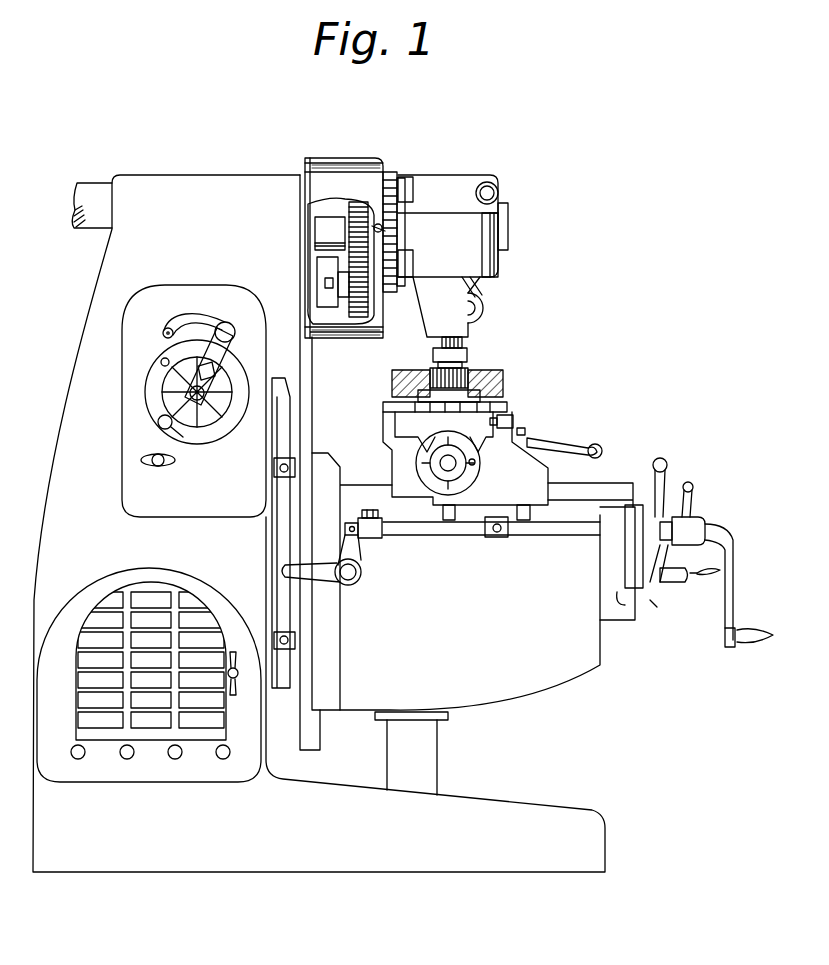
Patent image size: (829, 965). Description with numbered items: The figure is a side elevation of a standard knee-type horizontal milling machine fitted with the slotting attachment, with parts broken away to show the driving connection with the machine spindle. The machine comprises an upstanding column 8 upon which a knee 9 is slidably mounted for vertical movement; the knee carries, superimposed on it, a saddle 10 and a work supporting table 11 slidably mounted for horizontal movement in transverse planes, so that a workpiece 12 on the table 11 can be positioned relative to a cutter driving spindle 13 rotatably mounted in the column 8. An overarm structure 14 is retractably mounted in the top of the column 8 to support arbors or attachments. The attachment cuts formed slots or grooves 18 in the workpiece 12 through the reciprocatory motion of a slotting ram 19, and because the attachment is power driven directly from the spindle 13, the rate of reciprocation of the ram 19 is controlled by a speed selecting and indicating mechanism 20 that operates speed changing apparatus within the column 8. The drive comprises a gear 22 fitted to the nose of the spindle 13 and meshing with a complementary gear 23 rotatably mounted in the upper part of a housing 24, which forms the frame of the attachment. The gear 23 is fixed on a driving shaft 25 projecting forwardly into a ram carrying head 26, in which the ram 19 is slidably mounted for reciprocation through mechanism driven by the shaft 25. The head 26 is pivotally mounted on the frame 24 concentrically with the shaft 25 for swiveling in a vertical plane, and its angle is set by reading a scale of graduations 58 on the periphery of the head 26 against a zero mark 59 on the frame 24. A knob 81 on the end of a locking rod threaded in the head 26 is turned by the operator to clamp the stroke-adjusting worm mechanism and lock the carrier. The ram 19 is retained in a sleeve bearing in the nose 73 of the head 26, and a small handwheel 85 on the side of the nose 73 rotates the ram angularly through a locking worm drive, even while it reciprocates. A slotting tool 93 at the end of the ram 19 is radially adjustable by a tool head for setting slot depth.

The column 8 is at (90, 293).
The knee 9 is at (527, 695).
The saddle 10 is at (538, 477).
The work supporting table 11 is at (507, 407).
The workpiece 12 is at (503, 383).
The cutter driving spindle 13 is at (320, 273).
The overarm structure 14 is at (95, 183).
The slots or grooves 18 is at (432, 368).
The slotting ram 19 is at (462, 343).
The speed selecting and indicating mechanism 20 is at (208, 433).
The gear 22 is at (350, 313).
The complementary gear 23 is at (315, 233).
The housing 24 is at (380, 160).
The driving shaft 25 is at (347, 221).
The ram carrying head 26 is at (502, 268).
The scale of graduations 58 is at (398, 233).
The zero mark 59 is at (379, 223).
The nose 73 is at (438, 305).
The knob 81 is at (477, 200).
The handwheel 85 is at (497, 300).
The slotting tool 93 is at (470, 370).